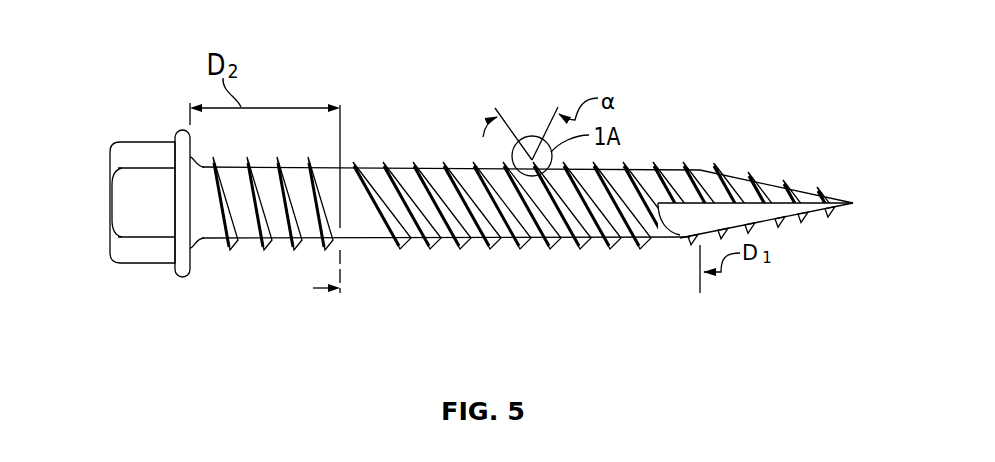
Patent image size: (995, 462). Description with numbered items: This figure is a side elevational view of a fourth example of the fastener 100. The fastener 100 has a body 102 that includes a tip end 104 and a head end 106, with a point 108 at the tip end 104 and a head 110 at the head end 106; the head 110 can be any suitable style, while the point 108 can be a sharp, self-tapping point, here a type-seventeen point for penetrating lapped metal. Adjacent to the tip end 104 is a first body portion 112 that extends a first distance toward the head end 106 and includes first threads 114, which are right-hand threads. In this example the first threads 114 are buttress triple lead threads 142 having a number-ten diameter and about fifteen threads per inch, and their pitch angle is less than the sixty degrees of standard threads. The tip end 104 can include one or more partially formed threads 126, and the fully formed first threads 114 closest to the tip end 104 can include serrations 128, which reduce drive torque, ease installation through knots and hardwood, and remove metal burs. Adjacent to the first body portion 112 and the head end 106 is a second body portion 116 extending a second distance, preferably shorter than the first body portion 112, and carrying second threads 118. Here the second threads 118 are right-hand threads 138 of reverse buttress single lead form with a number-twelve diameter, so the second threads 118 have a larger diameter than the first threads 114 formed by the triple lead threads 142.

The fastener 100 is at (126, 64).
The body 102 is at (375, 140).
The tip end 104 is at (824, 238).
The head end 106 is at (80, 262).
The point 108 is at (838, 200).
The head 110 is at (110, 156).
The first body portion 112 is at (472, 243).
The first threads 114 is at (425, 245).
The second body portion 116 is at (249, 255).
The second threads 118 is at (227, 246).
The partially formed threads 126 is at (650, 232).
The serrations 128 is at (645, 222).
The right-hand threads 138 is at (231, 220).
The buttress triple lead threads 142 is at (578, 250).